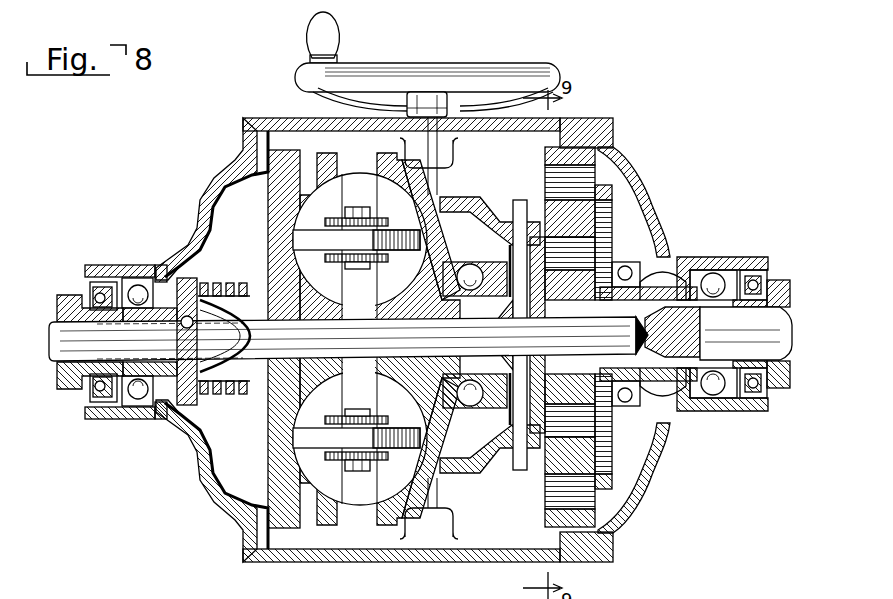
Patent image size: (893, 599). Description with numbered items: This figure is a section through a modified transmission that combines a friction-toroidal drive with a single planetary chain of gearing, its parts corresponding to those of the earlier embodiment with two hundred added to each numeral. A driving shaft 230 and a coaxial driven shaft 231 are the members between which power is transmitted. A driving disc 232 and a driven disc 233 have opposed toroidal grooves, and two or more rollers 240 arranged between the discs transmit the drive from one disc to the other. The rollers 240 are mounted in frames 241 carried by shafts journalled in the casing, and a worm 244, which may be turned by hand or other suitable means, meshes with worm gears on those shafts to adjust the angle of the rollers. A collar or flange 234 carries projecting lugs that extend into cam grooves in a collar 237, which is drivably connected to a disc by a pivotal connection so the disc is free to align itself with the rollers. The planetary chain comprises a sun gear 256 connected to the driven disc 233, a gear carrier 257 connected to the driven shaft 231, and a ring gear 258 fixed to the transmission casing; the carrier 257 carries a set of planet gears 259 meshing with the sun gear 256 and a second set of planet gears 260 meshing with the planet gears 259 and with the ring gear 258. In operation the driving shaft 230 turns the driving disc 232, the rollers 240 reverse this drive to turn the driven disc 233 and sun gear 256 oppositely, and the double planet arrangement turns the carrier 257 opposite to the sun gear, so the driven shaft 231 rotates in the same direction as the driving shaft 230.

The driving shaft 230 is at (63, 388).
The driven shaft 231 is at (783, 400).
The driving disc 232 is at (277, 240).
The driven disc 233 is at (389, 170).
The collar or flange 234 is at (187, 293).
The collar 237 is at (212, 288).
The rollers 240 is at (335, 232).
The frames 241 is at (330, 200).
The worm 244 is at (432, 165).
The sun gear 256 is at (650, 273).
The gear carrier 257 is at (607, 203).
The ring gear 258 is at (590, 125).
The planet gears 259 is at (650, 195).
The second set of planet gears 260 is at (583, 488).